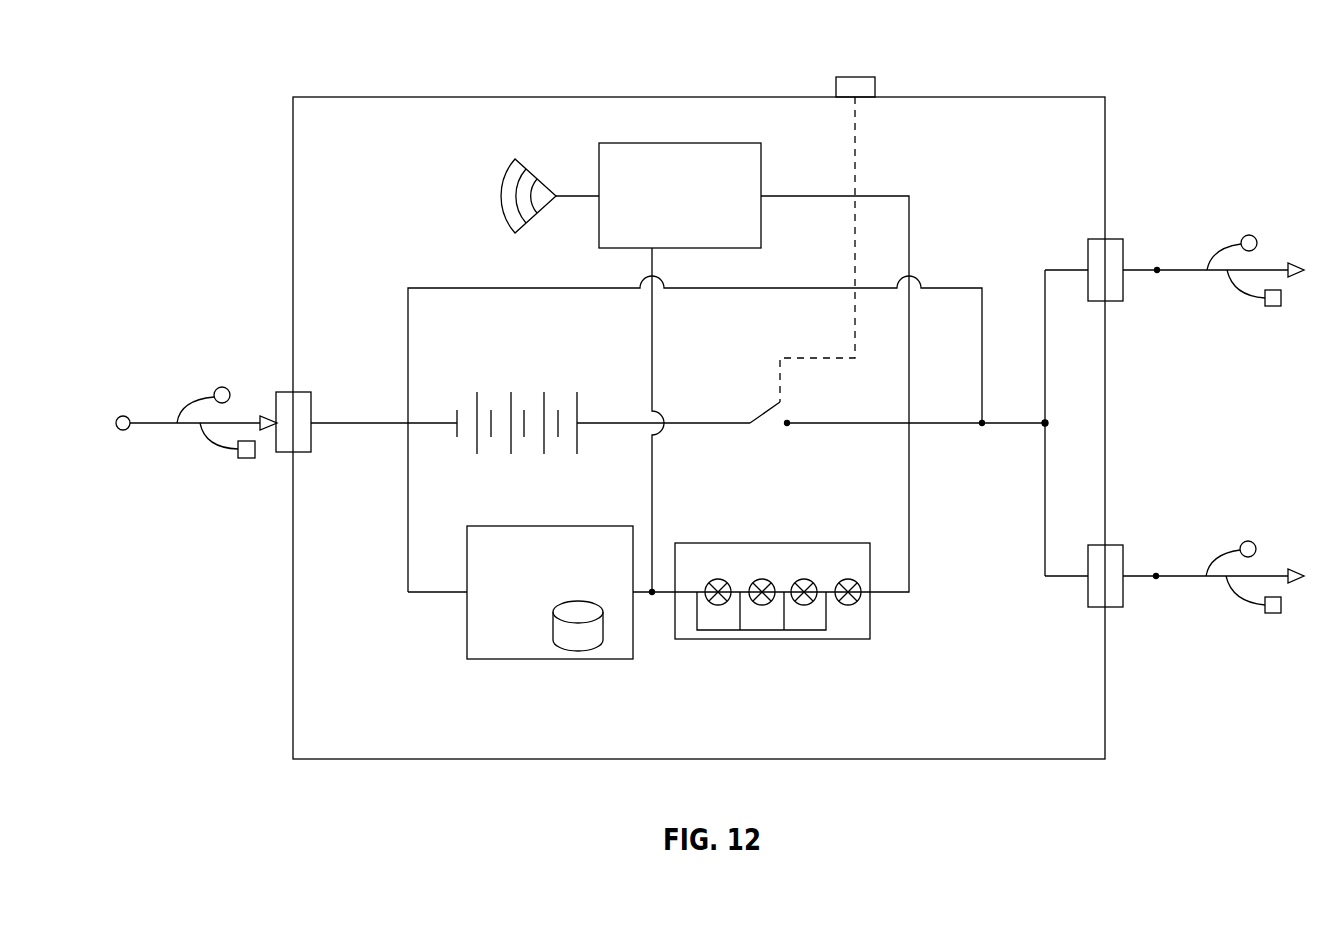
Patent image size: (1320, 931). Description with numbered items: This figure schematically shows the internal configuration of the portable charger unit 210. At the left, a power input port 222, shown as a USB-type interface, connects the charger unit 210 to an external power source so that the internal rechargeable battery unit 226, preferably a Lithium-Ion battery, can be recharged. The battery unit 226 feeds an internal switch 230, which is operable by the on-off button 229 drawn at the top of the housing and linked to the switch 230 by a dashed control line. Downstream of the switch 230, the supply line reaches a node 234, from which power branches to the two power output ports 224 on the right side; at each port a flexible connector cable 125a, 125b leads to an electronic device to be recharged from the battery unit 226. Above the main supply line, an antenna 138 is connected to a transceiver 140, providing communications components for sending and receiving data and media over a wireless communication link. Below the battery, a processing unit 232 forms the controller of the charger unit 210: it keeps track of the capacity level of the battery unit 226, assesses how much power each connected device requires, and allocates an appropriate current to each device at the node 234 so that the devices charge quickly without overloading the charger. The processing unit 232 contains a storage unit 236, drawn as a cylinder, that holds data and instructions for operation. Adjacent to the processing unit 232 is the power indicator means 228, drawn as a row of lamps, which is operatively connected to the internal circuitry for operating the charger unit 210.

The charger unit 210 is at (477, 66).
The transceiver 140 is at (713, 143).
The antenna 138 is at (497, 208).
The on-off button 229 is at (862, 78).
The power input port 222 is at (287, 453).
The rechargeable battery unit 226 is at (503, 385).
The internal switch 230 is at (777, 436).
The node 234 is at (1043, 426).
The processing unit 232 is at (512, 526).
The storage unit 236 is at (578, 636).
The power indicator means 228 is at (800, 640).
The power output ports 224 is at (1137, 268).
The USB output cable a 125a is at (1188, 272).
The USB output cable b 125b is at (1193, 578).